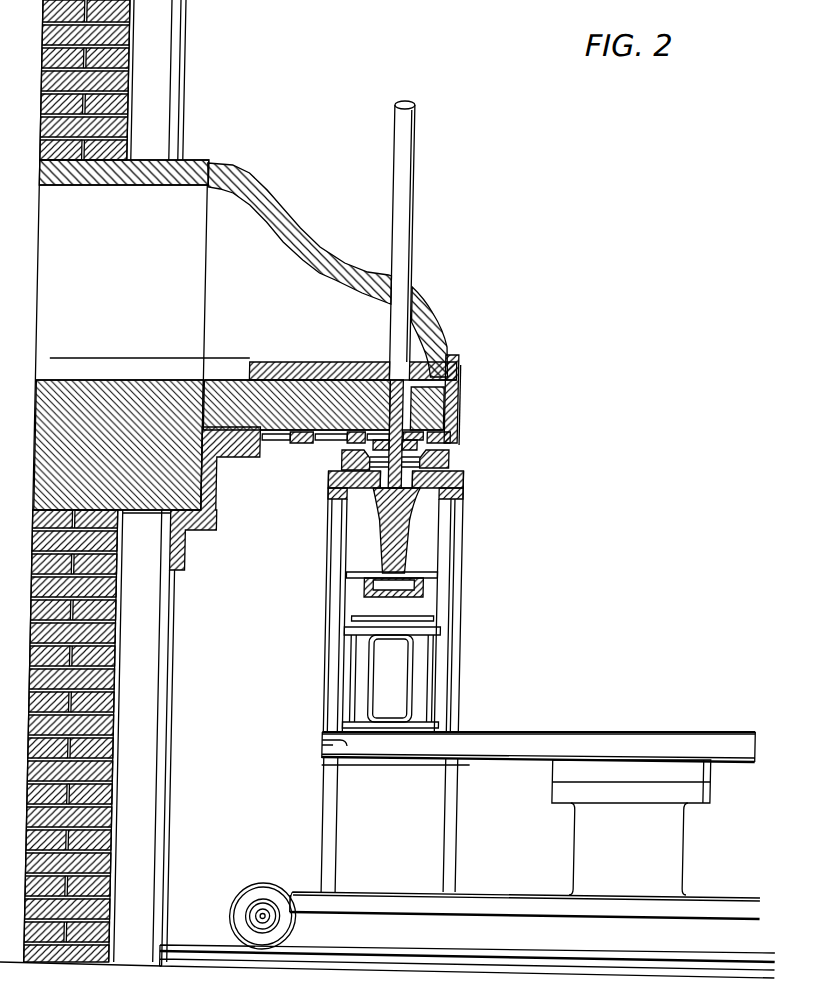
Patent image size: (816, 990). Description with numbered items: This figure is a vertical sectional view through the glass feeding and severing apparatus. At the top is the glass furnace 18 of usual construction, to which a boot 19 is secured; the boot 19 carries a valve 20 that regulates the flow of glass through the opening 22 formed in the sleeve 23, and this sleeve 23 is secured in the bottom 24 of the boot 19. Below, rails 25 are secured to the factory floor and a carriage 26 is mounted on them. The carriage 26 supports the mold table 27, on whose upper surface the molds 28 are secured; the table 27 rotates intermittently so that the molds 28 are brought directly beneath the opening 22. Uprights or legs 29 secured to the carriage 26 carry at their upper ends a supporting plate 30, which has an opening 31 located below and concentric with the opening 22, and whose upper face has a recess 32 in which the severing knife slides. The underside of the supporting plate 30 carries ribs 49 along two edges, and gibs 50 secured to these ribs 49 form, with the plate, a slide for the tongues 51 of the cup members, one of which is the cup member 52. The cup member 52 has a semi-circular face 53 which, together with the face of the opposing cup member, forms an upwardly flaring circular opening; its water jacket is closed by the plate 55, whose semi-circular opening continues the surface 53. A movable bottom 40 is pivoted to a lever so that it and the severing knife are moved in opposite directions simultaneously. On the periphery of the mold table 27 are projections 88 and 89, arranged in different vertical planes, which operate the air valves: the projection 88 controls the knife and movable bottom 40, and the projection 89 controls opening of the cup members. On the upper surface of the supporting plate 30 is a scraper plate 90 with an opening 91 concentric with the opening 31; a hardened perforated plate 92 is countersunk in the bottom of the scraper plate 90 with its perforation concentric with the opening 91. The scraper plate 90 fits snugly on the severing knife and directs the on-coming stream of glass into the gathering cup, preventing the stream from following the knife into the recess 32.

The glass furnace 18 is at (132, 103).
The boot 19 is at (305, 232).
The valve 20 is at (410, 228).
The opening 22 is at (468, 377).
The sleeve 23 is at (373, 377).
The bottom 24 is at (213, 410).
The rails 25 is at (206, 948).
The carriage 26 is at (436, 904).
The mold table 27 is at (528, 748).
The molds 28 is at (439, 695).
The uprights or legs 29 is at (457, 825).
The supporting plate 30 is at (338, 480).
The opening 31 is at (381, 472).
The recess 32 is at (375, 480).
The movable bottom 40 is at (437, 590).
The ribs 49 is at (357, 468).
The gibs 50 is at (360, 486).
The tongues 51 is at (362, 493).
The cup member 52 is at (449, 541).
The semi-circular face 53 is at (473, 515).
The plate 55 is at (456, 571).
The projection 88 is at (340, 752).
The projection 89 is at (340, 732).
The scraper plate 90 is at (462, 452).
The opening 91 is at (459, 459).
The perforated plate 92 is at (351, 460).